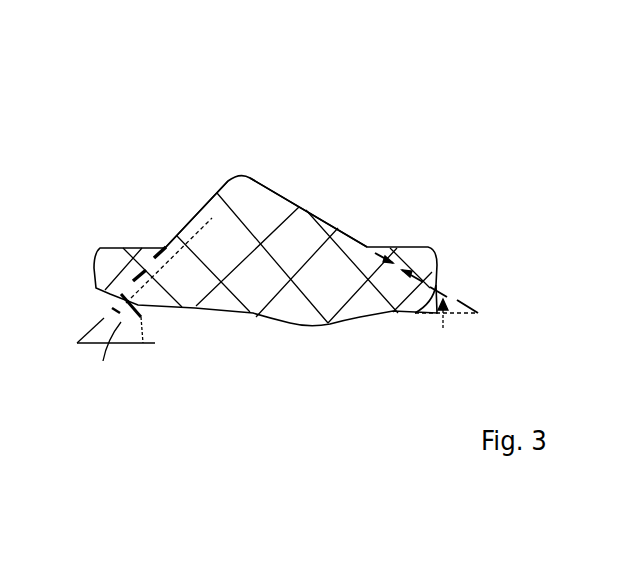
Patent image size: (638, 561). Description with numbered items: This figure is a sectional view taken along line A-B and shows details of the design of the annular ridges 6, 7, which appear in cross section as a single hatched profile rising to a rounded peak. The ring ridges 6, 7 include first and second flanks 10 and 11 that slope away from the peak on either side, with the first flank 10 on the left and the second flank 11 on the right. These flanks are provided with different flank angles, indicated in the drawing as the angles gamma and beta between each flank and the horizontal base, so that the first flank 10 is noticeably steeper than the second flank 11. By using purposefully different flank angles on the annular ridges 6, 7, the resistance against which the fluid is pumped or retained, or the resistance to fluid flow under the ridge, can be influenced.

The annular ridge 6 is at (253, 210).
The annular ridge 7 is at (253, 210).
The first flank 10 is at (124, 106).
The second flank 11 is at (396, 134).